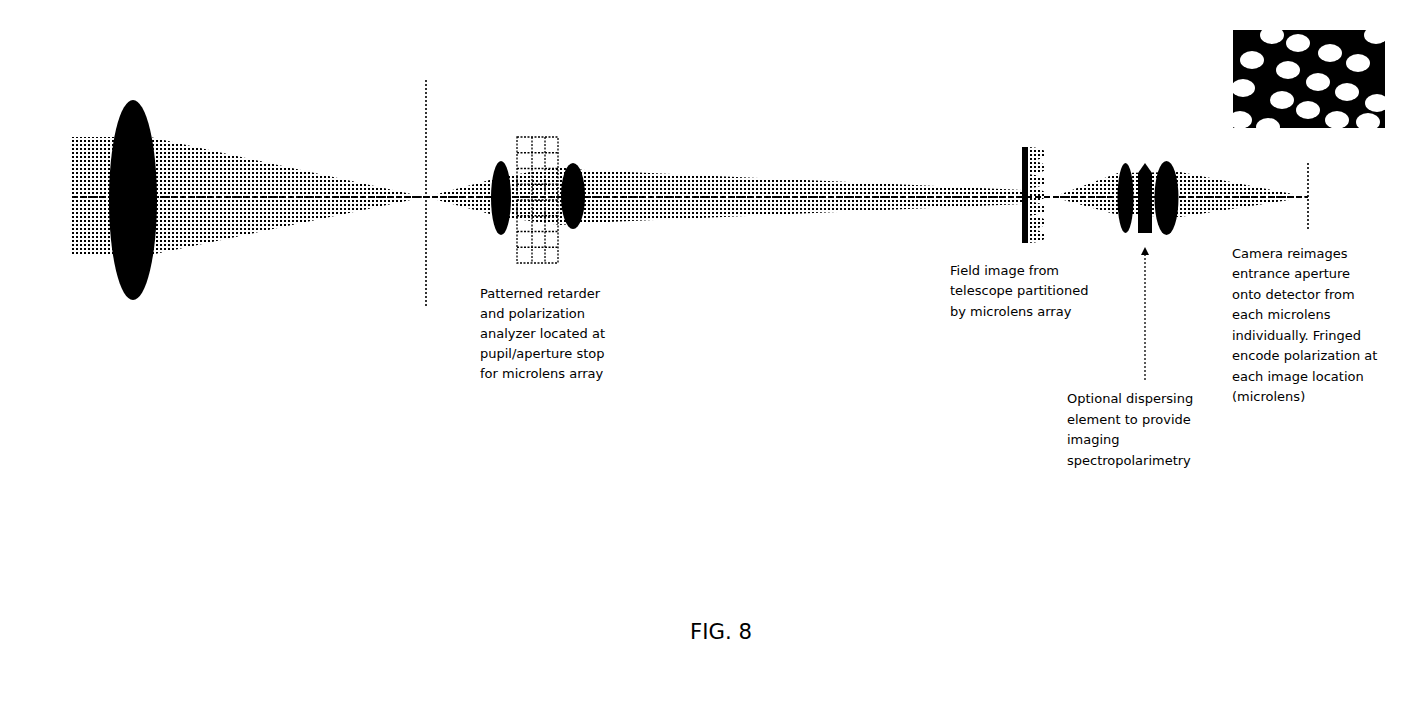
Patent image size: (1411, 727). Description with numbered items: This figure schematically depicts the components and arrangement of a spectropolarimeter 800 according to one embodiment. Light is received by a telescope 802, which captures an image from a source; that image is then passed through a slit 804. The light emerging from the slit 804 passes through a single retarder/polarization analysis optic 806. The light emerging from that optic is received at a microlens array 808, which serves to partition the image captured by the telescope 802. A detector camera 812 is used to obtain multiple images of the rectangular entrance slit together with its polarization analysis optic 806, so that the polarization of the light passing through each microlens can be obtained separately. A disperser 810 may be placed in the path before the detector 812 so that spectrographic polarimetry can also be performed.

The spectropolarimeter 800 is at (717, 462).
The telescope 802 is at (145, 280).
The slit 804 is at (418, 253).
The retarder/polarization analysis optic 806 is at (547, 130).
The microlens array 808 is at (1012, 158).
The disperser 810 is at (1143, 153).
The detector camera 812 is at (1312, 207).